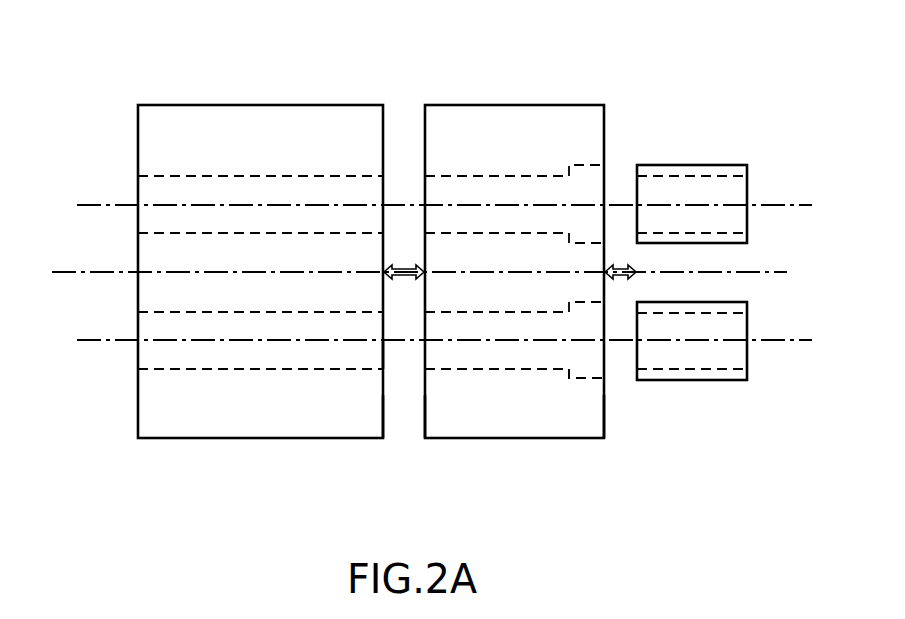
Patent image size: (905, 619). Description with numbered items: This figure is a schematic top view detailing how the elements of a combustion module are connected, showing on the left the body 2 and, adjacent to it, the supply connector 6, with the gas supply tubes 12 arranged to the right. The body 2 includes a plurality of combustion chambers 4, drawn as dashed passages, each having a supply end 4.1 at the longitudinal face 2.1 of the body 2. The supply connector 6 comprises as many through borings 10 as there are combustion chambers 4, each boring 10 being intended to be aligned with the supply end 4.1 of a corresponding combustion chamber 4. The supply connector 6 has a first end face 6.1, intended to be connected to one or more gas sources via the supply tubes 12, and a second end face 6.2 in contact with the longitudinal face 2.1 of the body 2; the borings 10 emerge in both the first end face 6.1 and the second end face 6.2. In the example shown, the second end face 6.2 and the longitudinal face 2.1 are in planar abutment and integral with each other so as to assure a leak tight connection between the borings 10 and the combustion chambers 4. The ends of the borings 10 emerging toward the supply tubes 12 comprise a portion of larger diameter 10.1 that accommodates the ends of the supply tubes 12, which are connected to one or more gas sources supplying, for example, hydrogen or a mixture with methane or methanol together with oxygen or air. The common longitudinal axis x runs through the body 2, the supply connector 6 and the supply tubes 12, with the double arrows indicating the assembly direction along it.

The body 2 is at (328, 94).
The combustion chamber 4 is at (349, 183).
The supply connector 6 is at (523, 96).
The through boring 10 is at (551, 183).
The supply tube 12 is at (735, 188).
The longitudinal face 2.1 is at (383, 417).
The supply end 4.1 is at (384, 353).
The first end face 6.1 is at (604, 420).
The second end face 6.2 is at (425, 417).
The portion of larger diameter 10.1 is at (580, 377).
The longitudinal axis x is at (65, 272).